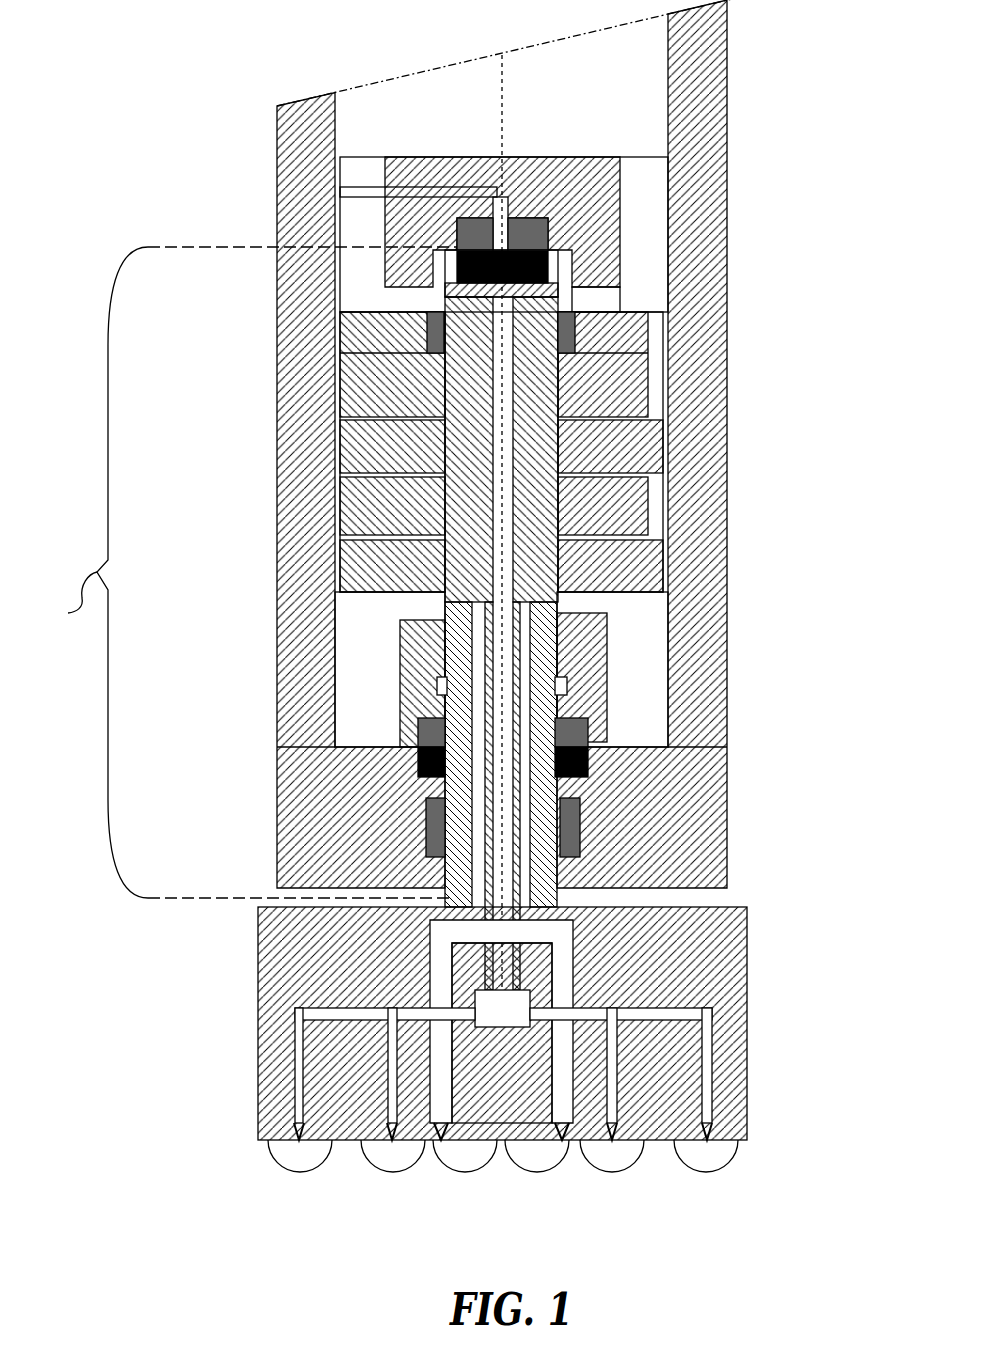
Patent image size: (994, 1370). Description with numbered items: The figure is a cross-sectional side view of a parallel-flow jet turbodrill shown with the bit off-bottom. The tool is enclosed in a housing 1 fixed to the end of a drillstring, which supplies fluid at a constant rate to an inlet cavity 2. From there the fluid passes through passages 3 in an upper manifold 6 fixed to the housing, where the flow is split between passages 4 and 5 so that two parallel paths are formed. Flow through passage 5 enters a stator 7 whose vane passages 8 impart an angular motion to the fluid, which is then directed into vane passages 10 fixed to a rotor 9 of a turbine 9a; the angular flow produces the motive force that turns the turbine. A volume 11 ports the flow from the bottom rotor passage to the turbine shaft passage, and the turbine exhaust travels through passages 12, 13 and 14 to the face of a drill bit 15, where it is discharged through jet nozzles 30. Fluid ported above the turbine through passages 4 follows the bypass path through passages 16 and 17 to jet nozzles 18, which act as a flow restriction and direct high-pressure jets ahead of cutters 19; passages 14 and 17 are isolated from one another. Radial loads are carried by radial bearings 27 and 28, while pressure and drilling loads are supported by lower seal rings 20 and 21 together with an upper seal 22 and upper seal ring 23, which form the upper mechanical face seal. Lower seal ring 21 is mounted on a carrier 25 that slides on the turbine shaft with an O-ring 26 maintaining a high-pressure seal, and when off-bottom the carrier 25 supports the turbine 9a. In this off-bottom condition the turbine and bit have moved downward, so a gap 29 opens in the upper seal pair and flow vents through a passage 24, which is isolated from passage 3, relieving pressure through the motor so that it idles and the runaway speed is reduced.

The housing 1 is at (695, 105).
The inlet cavity 2 is at (578, 97).
The passages 3 is at (660, 237).
The passages 4 is at (595, 297).
The passage 5 is at (657, 334).
The upper manifold 6 is at (598, 232).
The stator 7 is at (628, 392).
The vane passages 8 is at (659, 404).
The rotor 9 is at (626, 455).
The turbine 9a is at (247, 572).
The vane passages 10 is at (655, 464).
The volume 11 is at (645, 672).
The passage 12 is at (550, 613).
The passage 13 is at (527, 822).
The passage 14 is at (572, 952).
The drill bit 15 is at (720, 978).
The passage 16 is at (510, 562).
The passage 17 is at (708, 1045).
The jet nozzles 18 is at (717, 1141).
The cutters 19 is at (708, 1157).
The lower seal ring 20 is at (425, 832).
The lower seal ring 21 is at (415, 770).
The upper seal 22 is at (455, 288).
The upper seal ring 23 is at (452, 228).
The passage 24 is at (480, 190).
The carrier 25 is at (420, 690).
The O-ring 26 is at (437, 680).
The radial bearing 27 is at (422, 338).
The radial bearing 28 is at (257, 940).
The gap 29 is at (438, 247).
The jet nozzles 30 is at (560, 1135).